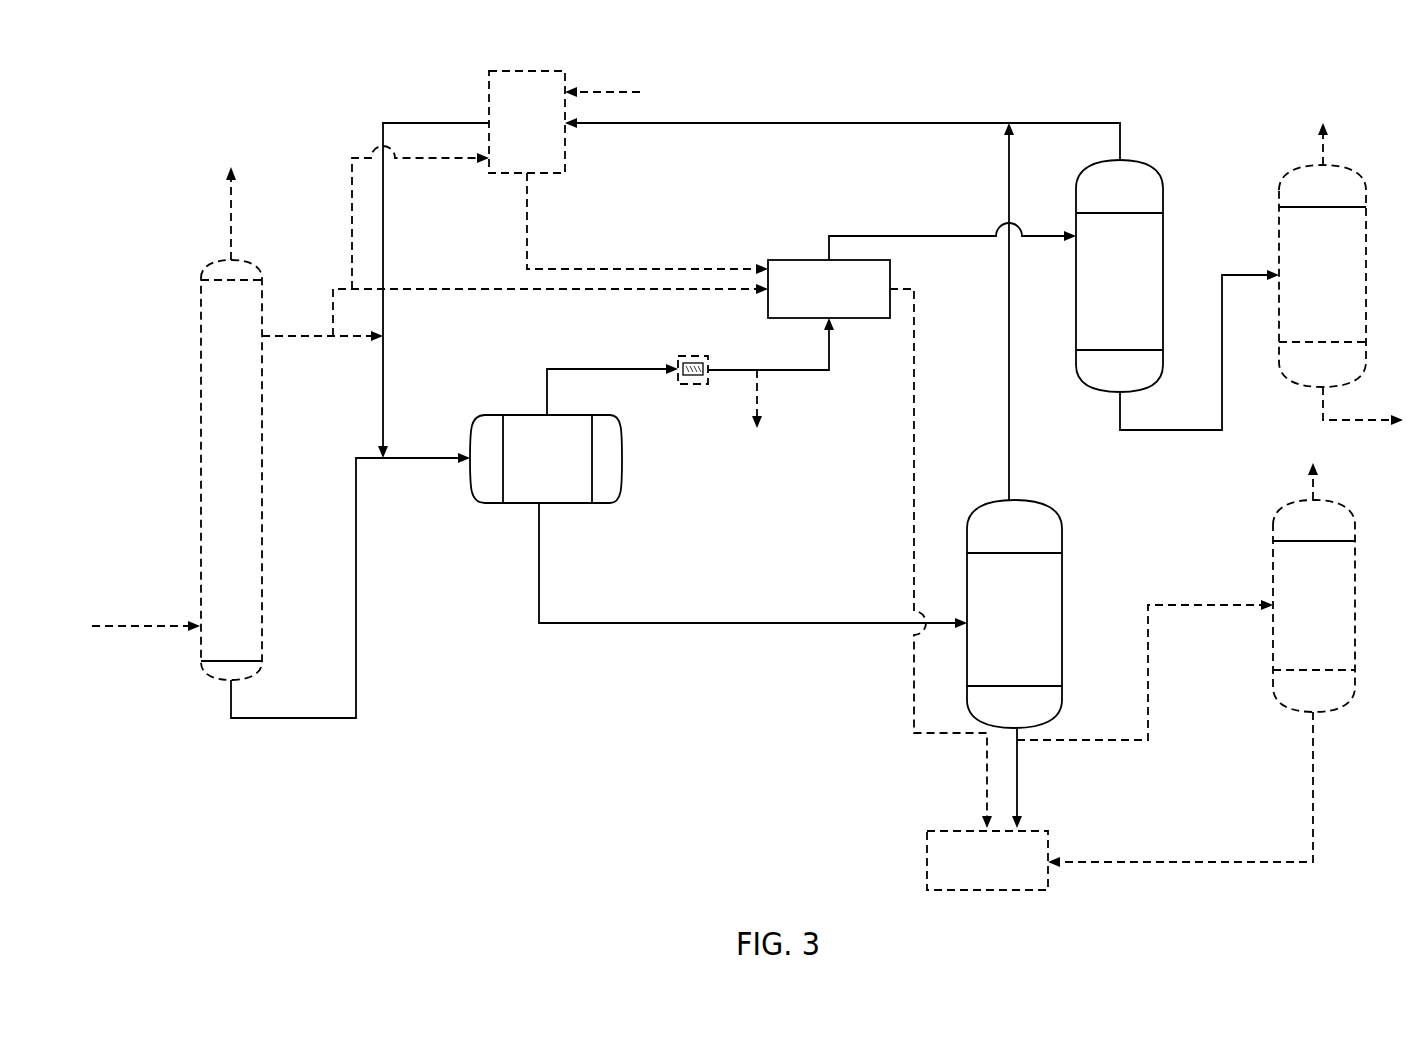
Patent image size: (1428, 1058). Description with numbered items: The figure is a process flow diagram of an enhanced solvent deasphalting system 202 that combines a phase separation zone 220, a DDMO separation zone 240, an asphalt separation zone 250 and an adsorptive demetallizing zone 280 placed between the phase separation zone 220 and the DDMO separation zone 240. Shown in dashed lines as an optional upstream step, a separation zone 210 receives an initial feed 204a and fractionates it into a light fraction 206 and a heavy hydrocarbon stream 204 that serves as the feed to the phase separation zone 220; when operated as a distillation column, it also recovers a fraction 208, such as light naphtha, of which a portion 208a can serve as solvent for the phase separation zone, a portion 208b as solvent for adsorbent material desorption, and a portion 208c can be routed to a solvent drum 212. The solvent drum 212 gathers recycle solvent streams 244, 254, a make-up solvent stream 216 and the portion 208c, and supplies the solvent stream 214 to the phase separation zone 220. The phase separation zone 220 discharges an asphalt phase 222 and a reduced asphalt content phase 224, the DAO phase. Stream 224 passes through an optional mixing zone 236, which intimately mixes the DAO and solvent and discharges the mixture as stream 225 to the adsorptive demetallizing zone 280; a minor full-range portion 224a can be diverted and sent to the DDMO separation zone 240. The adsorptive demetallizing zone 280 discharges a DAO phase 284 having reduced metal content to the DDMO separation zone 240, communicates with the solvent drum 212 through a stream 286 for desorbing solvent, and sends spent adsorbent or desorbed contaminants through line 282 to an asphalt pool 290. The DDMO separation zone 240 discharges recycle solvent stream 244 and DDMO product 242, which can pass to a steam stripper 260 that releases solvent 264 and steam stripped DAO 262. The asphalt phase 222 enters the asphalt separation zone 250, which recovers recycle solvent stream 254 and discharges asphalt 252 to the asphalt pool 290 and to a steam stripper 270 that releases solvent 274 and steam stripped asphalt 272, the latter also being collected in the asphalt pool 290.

The enhanced solvent deasphalting system 202 is at (224, 119).
The hydrocarbon stream 204 is at (355, 590).
The initial feed 204a is at (152, 626).
The light fraction 206 is at (229, 202).
The fraction derived from the initial feed 208 is at (299, 334).
The portion of the fraction used as solvent for the phase separation zone 208a is at (357, 341).
The portion of the fraction used as solvent for adsorbent material desorption 208b is at (470, 291).
The portion of the fraction routed to the solvent drum 208c is at (351, 192).
The separation zone 210 is at (231, 470).
The solvent drum 212 is at (527, 122).
The solvent stream 214 is at (381, 411).
The make-up solvent stream 216 is at (621, 90).
The phase separation zone 220 is at (546, 459).
The asphalt phase 222 is at (700, 625).
The reduced asphalt content phase 224 is at (640, 372).
The diverted portion of stream 224 224a is at (760, 396).
The mixture stream discharged from the mixing zone 225 is at (832, 372).
The mixing zone 236 is at (698, 356).
The DDMO separation zone 240 is at (1119, 276).
The DDMO product 242 is at (1140, 433).
The solvent stream 244 is at (1061, 122).
The asphalt separation zone 250 is at (1014, 614).
The asphalt 252 is at (1019, 775).
The recycle solvent stream 254 is at (1012, 435).
The steam stripper 260 is at (1322, 276).
The steam stripped DAO 262 is at (1376, 420).
The solvent 264 is at (1326, 145).
The steam stripper 270 is at (1186, 620).
The steam stripped asphalt 272 is at (1316, 760).
The solvent 274 is at (1316, 483).
The adsorptive demetallizing zone 280 is at (829, 289).
The line 282 is at (916, 333).
The DAO phase having a reduced metal content 284 is at (921, 234).
The stream between adsorptive demetallizing zone and solvent drum 286 is at (604, 268).
The asphalt pool 290 is at (987, 860).